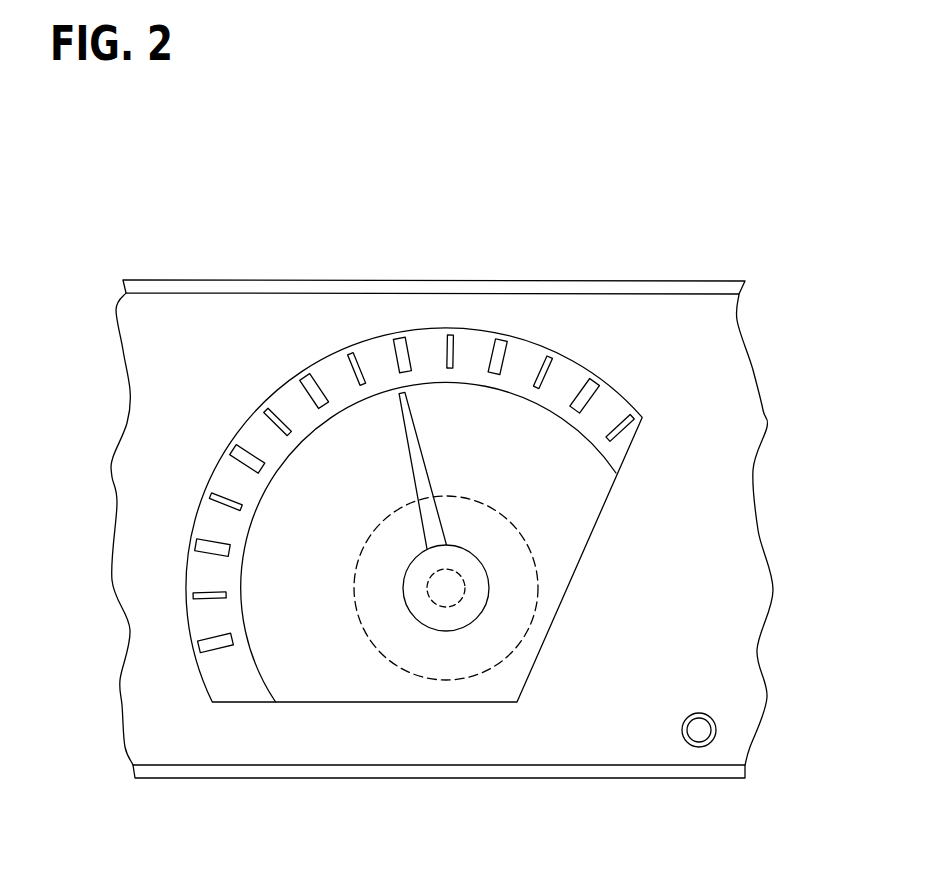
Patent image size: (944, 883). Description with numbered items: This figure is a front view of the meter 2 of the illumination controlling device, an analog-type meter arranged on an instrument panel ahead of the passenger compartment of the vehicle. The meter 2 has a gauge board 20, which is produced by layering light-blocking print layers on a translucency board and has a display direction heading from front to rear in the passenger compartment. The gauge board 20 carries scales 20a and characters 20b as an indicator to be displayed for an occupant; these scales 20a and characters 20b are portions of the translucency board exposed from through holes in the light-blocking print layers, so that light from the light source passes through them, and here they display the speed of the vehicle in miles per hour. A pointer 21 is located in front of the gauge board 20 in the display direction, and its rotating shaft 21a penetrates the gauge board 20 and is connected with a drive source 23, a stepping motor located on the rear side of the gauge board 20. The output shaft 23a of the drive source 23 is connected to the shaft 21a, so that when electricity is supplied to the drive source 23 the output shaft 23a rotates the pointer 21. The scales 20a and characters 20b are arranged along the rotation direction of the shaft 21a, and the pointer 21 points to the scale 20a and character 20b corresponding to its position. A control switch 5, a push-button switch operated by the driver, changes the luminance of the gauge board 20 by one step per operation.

The meter 2 is at (117, 218).
The control switch 5 is at (696, 735).
The gauge board 20 is at (693, 317).
The scales 20a is at (347, 356).
The characters 20b is at (277, 495).
The pointer 21 is at (400, 390).
The rotating shaft 21a is at (415, 618).
The drive source 23 is at (487, 668).
The output shaft 23a is at (446, 607).